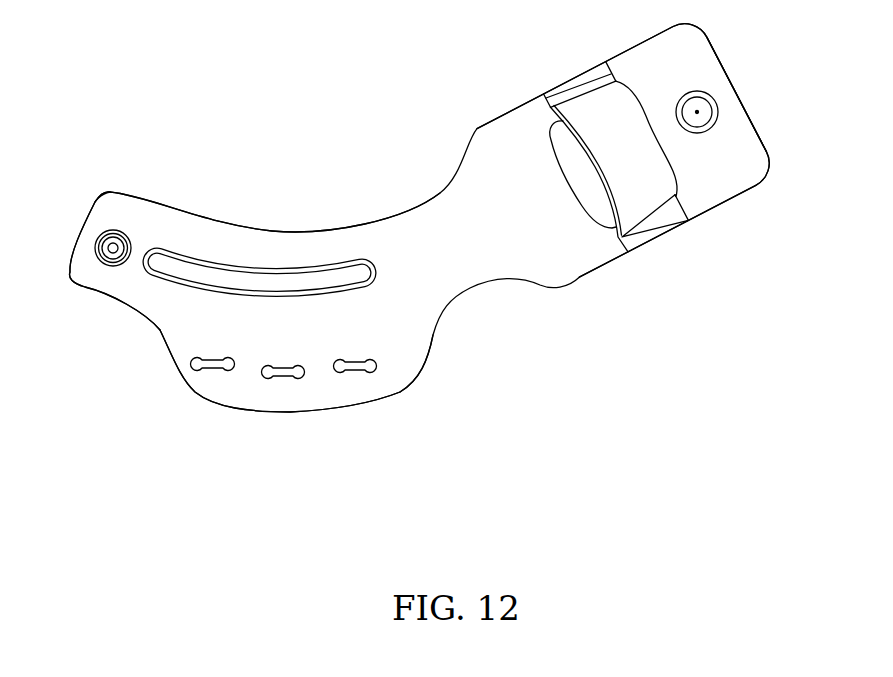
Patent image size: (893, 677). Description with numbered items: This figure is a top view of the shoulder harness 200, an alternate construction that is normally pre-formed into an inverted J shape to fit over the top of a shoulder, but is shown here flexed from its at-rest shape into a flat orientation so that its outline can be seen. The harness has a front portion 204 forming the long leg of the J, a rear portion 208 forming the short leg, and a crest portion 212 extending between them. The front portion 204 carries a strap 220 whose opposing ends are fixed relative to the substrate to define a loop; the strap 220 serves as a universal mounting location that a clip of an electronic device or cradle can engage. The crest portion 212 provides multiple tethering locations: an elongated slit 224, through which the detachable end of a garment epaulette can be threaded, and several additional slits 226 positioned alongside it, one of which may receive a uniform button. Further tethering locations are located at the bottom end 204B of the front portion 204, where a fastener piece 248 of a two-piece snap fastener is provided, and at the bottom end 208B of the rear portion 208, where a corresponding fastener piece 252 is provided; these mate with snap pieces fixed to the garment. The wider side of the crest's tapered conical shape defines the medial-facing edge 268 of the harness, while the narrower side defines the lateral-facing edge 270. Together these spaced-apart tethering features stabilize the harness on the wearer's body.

The shoulder harness 200 is at (194, 80).
The front portion 204 is at (655, 273).
The bottom end of the front portion 204B is at (747, 147).
The rear portion 208 is at (123, 288).
The bottom end of the rear portion 208B is at (120, 212).
The crest portion 212 is at (255, 443).
The strap 220 is at (587, 120).
The slit 224 is at (253, 281).
The additional slits 226 is at (211, 373).
The fastener piece 248 is at (714, 107).
The fastener piece 252 is at (104, 247).
The medial-facing edge 268 is at (420, 373).
The lateral-facing edge 270 is at (275, 230).